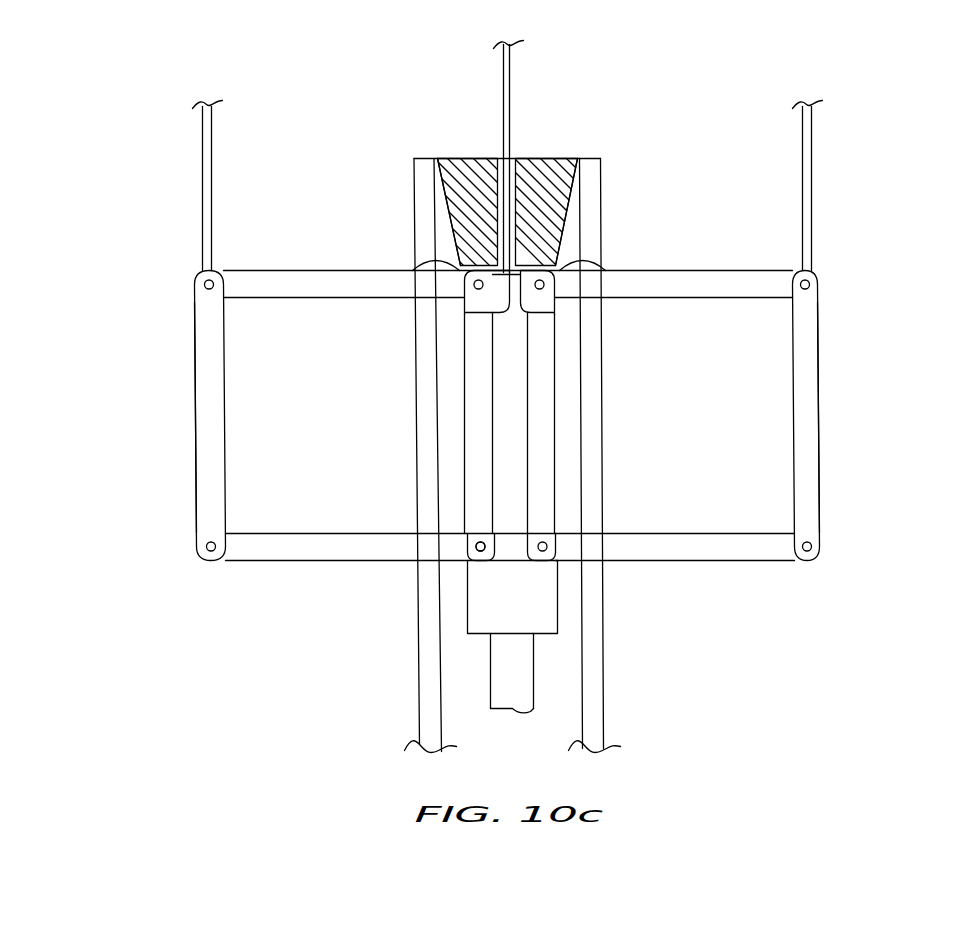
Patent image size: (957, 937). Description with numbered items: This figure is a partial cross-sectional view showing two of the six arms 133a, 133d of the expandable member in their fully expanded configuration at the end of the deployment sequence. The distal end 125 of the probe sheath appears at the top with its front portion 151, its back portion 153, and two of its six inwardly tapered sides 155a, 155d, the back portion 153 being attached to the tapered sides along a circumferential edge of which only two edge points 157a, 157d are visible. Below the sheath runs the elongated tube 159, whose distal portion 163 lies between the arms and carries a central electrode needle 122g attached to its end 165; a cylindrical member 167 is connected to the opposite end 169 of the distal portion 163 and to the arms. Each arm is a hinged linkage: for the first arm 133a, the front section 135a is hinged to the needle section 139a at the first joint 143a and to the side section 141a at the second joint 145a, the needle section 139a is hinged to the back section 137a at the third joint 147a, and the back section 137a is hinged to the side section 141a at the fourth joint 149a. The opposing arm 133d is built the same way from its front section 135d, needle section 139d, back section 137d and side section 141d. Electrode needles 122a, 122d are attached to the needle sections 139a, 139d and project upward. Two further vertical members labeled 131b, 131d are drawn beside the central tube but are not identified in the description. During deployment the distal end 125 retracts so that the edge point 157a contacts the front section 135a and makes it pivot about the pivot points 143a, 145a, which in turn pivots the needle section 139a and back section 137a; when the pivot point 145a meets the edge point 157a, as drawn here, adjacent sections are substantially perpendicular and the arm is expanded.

The electrode needle 122g is at (508, 61).
The front portion 151 is at (458, 156).
The distal end 125 is at (549, 149).
The inwardly tapered side 155a is at (434, 207).
The inwardly tapered side 155d is at (567, 208).
The edge point 157a is at (470, 267).
The edge point 157d is at (605, 268).
The second joint 145a is at (463, 283).
The first joint 143a is at (199, 283).
The electrode needle 122a is at (200, 212).
The electrode needle 122d is at (810, 183).
The front section 135a is at (265, 268).
The front section 135d is at (678, 268).
The end 165 is at (480, 315).
The back portion 153 is at (545, 315).
The housing leg 131b is at (414, 355).
The housing leg 131d is at (599, 360).
The needle section 139a is at (191, 387).
The needle section 139d is at (816, 388).
The arm 133a is at (188, 430).
The arm 133d is at (818, 445).
The side section 141a is at (462, 467).
The side section 141d is at (553, 472).
The opposite end 169 is at (504, 531).
The distal portion 163 is at (527, 508).
The third joint 147a is at (204, 544).
The back section 137a is at (253, 560).
The back section 137d is at (658, 563).
The fourth joint 149a is at (471, 543).
The cylindrical member 167 is at (476, 606).
The elongated tube 159 is at (538, 666).